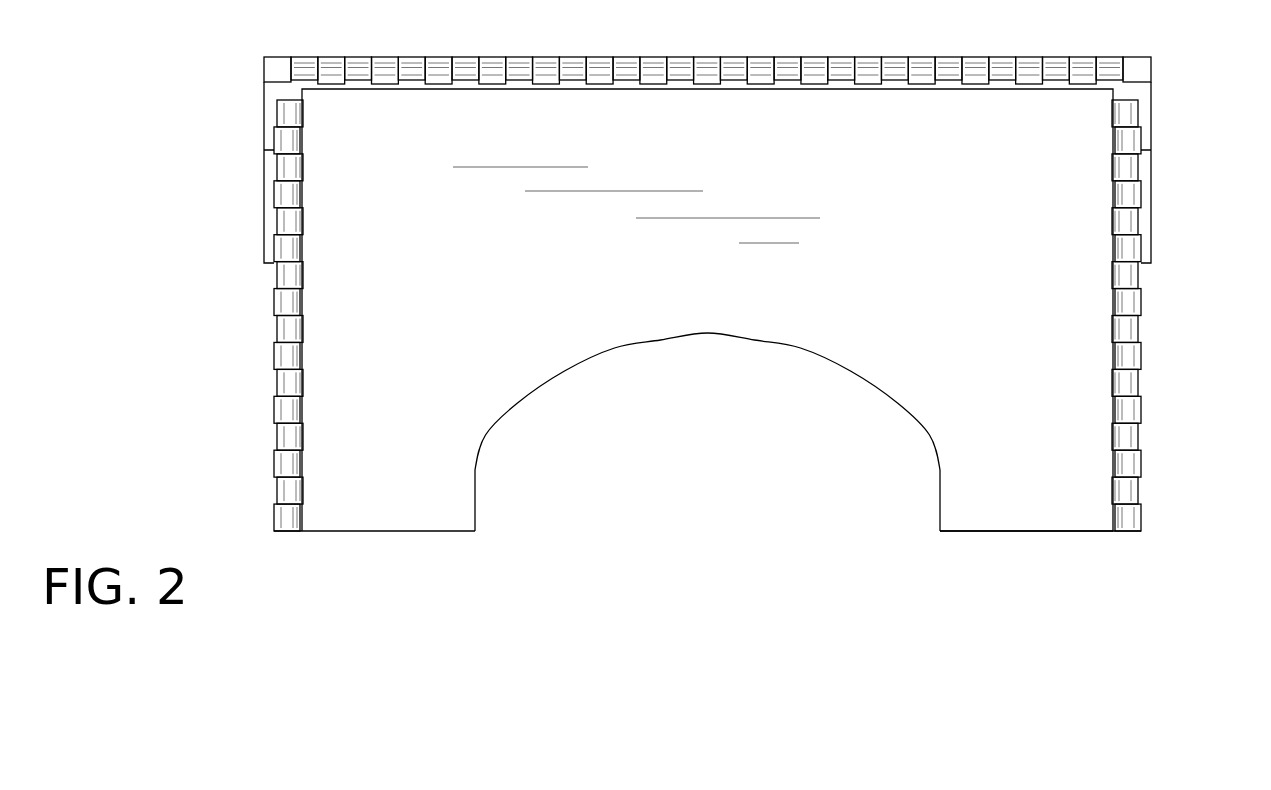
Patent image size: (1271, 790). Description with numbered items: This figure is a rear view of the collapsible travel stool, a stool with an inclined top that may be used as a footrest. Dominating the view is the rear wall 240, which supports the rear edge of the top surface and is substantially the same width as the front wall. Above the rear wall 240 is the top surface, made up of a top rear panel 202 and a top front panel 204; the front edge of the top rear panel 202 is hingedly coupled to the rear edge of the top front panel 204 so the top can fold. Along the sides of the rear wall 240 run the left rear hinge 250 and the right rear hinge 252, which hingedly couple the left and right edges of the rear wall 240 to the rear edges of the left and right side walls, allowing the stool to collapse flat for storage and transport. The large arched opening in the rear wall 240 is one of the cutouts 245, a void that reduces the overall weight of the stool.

The top rear panel 202 is at (265, 95).
The top front panel 204 is at (265, 213).
The right rear hinge 252 is at (273, 360).
The left rear hinge 250 is at (1140, 466).
The cutouts 245 is at (486, 440).
The rear wall 240 is at (1000, 518).